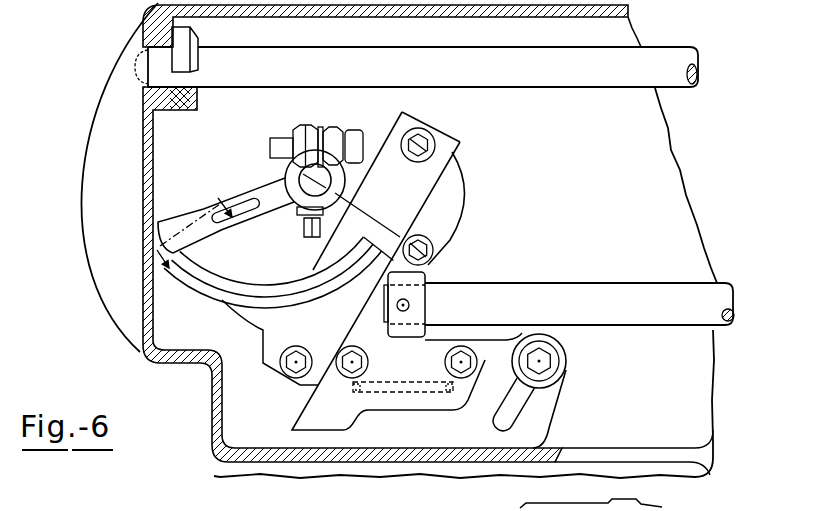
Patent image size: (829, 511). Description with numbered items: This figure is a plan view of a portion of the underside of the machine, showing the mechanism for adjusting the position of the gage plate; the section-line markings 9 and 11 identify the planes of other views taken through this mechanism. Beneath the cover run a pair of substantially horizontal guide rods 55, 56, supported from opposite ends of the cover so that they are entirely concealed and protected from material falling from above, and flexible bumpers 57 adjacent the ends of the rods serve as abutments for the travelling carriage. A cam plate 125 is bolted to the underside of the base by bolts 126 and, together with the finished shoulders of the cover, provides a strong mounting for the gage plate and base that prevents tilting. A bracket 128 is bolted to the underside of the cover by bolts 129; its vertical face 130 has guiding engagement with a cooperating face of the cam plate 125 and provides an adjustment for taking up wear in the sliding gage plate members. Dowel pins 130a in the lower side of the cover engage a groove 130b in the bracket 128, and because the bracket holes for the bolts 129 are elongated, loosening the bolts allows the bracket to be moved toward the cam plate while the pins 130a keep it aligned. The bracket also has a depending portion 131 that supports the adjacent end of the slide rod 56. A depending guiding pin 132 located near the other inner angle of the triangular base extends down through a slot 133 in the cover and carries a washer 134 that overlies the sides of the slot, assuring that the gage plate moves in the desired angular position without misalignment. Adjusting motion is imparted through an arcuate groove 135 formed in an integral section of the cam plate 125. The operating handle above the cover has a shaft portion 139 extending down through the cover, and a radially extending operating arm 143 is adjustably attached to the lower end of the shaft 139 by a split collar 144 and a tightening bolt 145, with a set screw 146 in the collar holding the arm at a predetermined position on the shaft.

The section line 9- 9 is at (194, 235).
The section line 11- 11 is at (258, 140).
The guide rod 55 is at (668, 47).
The guide rod 56 is at (578, 287).
The bumper 57 is at (200, 43).
The cam plate 125 is at (458, 152).
The bolt 126 is at (432, 137).
The bracket 128 is at (418, 406).
The bolt 129 is at (432, 249).
The vertical face 130 is at (301, 415).
The dowel pin 130a is at (454, 400).
The groove 130b is at (390, 394).
The depending portion 131 is at (417, 303).
The guiding pin 132 is at (552, 378).
The slot 133 is at (517, 412).
The washer 134 is at (557, 354).
The arcuate groove 135 is at (253, 287).
The shaft portion 139 is at (290, 170).
The operating arm 143 is at (250, 198).
The split collar 144 is at (389, 135).
The tightening bolt 145 is at (349, 127).
The set screw 146 is at (303, 229).